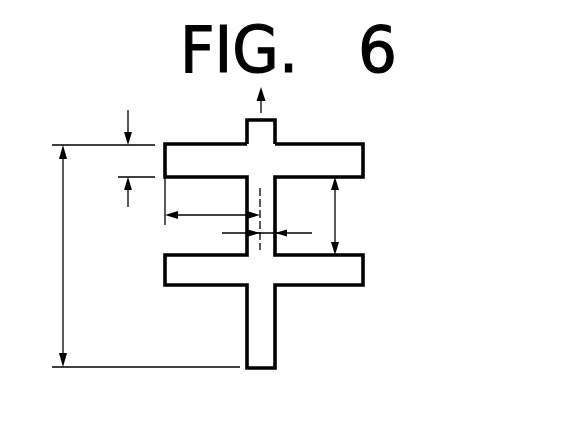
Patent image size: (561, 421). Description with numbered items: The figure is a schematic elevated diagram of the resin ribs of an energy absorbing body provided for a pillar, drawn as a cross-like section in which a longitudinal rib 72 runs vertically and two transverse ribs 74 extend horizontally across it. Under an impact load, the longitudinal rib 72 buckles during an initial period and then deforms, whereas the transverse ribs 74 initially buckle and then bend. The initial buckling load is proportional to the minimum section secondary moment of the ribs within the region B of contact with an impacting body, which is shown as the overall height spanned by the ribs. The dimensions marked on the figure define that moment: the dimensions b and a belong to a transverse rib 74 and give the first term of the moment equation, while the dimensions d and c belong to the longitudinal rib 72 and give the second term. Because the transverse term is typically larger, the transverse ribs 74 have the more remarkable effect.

The longitudinal rib 72 is at (275, 121).
The transverse ribs 74 is at (355, 160).
The region of contact with an impacting body B is at (137, 256).
The transverse rib thickness dimension b is at (124, 158).
The transverse rib dimension a is at (212, 213).
The longitudinal rib dimension c is at (267, 218).
The longitudinal rib dimension d is at (346, 216).